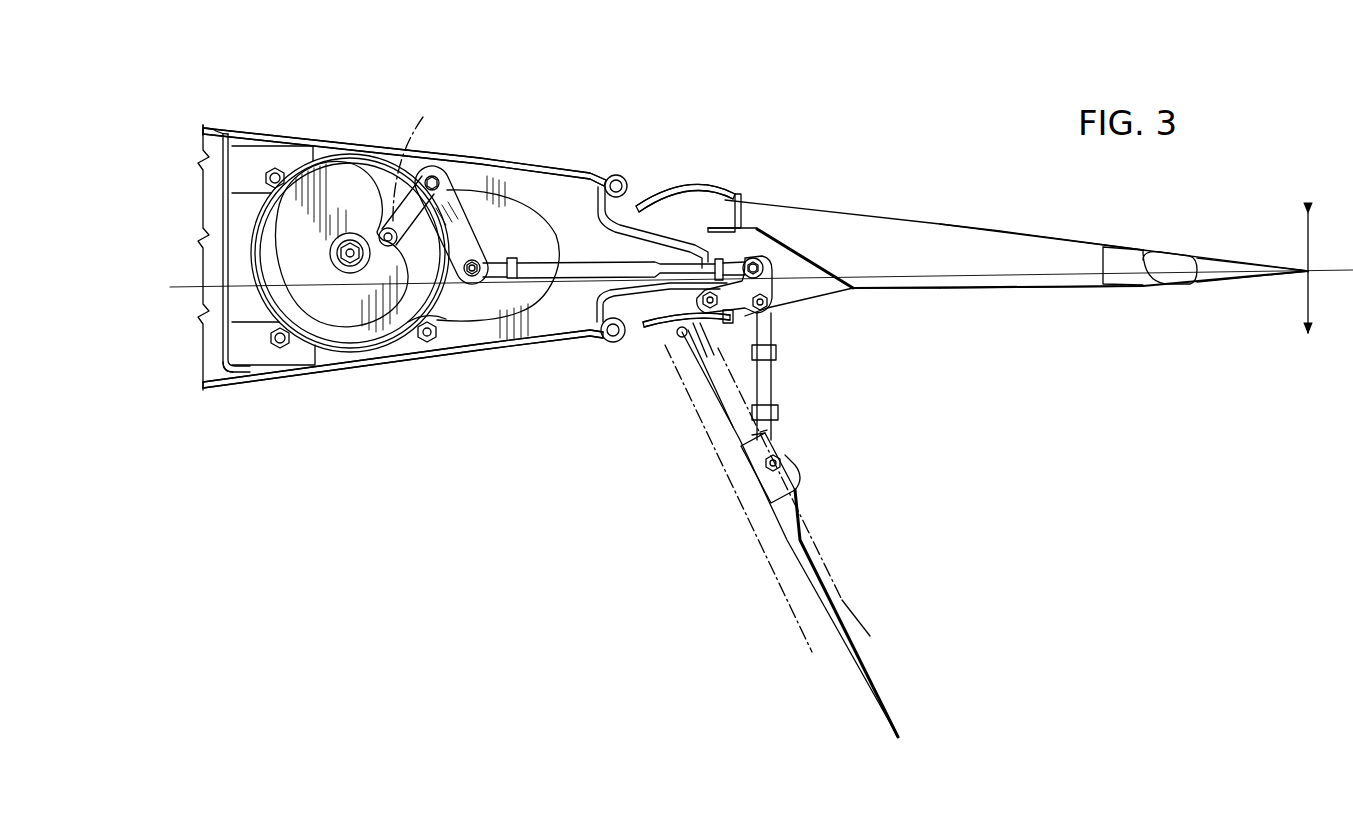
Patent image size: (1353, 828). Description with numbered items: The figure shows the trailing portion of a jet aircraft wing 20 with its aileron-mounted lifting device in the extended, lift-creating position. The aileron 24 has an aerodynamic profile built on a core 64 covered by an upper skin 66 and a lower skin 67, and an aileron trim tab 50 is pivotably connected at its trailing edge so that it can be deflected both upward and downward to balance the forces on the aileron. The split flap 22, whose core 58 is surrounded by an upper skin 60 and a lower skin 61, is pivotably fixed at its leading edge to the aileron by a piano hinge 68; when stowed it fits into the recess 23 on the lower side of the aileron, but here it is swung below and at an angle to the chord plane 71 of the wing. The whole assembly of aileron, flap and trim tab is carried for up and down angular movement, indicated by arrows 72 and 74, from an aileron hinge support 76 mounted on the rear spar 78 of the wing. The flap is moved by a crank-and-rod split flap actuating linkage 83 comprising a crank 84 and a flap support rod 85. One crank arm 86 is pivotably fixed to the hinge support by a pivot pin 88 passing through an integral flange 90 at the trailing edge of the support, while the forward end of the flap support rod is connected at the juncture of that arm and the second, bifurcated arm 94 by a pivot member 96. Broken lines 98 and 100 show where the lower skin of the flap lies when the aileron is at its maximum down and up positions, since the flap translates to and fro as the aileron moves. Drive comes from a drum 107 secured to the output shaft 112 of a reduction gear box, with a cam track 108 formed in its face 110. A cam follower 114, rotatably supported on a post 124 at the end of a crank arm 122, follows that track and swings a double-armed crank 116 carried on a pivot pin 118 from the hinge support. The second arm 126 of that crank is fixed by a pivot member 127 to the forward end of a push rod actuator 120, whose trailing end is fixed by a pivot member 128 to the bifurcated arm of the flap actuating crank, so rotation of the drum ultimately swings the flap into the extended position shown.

The wing 20 is at (316, 112).
The split flap 22 is at (777, 533).
The recess 23 is at (940, 292).
The aileron 24 is at (1016, 255).
The aileron trim tab 50 is at (1240, 282).
The core 58 is at (745, 464).
The upper skin 60 is at (846, 603).
The lower skin 61 is at (790, 540).
The core 64 is at (746, 212).
The upper skin 66 is at (1000, 230).
The lower skin 67 is at (1054, 289).
The piano hinge 68 is at (690, 345).
The chord plane 71 is at (181, 288).
The arrow 72 is at (1306, 233).
The arrow 74 is at (1306, 307).
The aileron hinge support 76 is at (580, 162).
The rear spar 78 is at (221, 352).
The split flap actuating linkage 83 is at (775, 257).
The crank 84 is at (779, 262).
The flap support rod 85 is at (773, 373).
The crank arm 86 is at (722, 342).
The pivot pin 88 is at (664, 338).
The integral flange 90 is at (710, 340).
The bifurcated arm 94 is at (768, 288).
The pivot member 96 is at (770, 303).
The broken line 98 is at (706, 452).
The broken line 100 is at (840, 541).
The drum 107 is at (318, 158).
The cam track 108 is at (300, 178).
The face 110 is at (303, 210).
The output shaft 112 is at (336, 270).
The cam follower 114 is at (426, 159).
The double-armed crank 116 is at (486, 189).
The pivot pin 118 is at (438, 180).
The push rod actuator 120 is at (532, 274).
The crank arm 122 is at (409, 173).
The post 124 is at (384, 226).
The second arm 126 is at (468, 203).
The pivot member 127 is at (466, 285).
The pivot member 128 is at (760, 257).